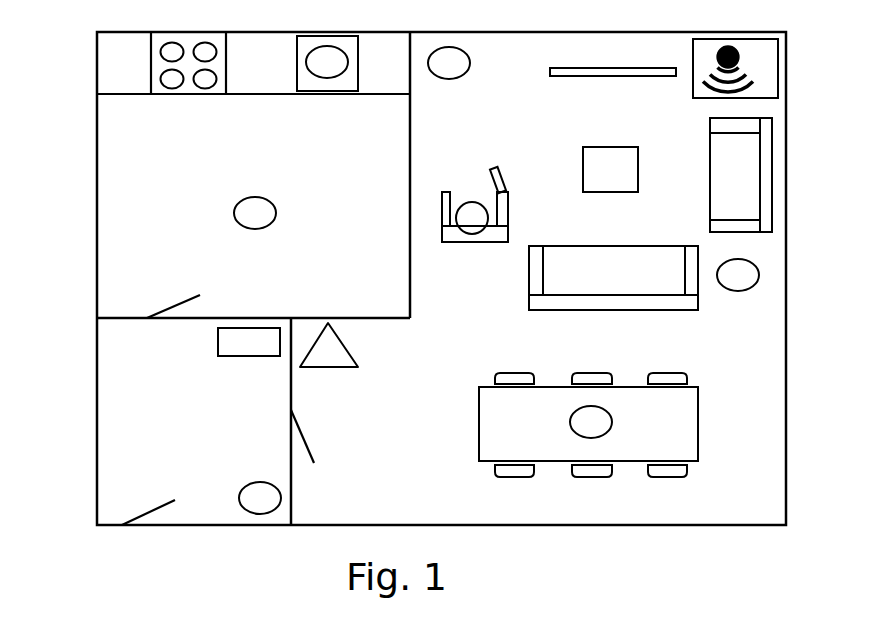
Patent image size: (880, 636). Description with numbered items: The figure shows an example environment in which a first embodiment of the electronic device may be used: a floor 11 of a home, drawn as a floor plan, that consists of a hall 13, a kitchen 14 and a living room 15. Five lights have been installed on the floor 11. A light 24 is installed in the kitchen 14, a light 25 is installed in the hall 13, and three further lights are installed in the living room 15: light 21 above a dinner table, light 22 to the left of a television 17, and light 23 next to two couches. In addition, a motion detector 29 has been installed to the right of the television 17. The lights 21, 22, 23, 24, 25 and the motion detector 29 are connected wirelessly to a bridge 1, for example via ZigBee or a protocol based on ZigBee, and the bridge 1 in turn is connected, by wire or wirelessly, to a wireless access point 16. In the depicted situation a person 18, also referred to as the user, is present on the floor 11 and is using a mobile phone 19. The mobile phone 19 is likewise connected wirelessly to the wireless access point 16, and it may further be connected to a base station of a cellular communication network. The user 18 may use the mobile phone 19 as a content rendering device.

The bridge 1 is at (329, 345).
The floor 11 is at (97, 115).
The hall 13 is at (126, 347).
The kitchen 14 is at (398, 307).
The living room 15 is at (770, 515).
The wireless access point 16 is at (249, 342).
The television 17 is at (613, 67).
The person 18 is at (455, 243).
The mobile phone 19 is at (487, 175).
The light 21 is at (588, 425).
The light 22 is at (449, 63).
The light 23 is at (738, 275).
The light 24 is at (255, 213).
The light 25 is at (260, 498).
The motion detector 29 is at (735, 68).